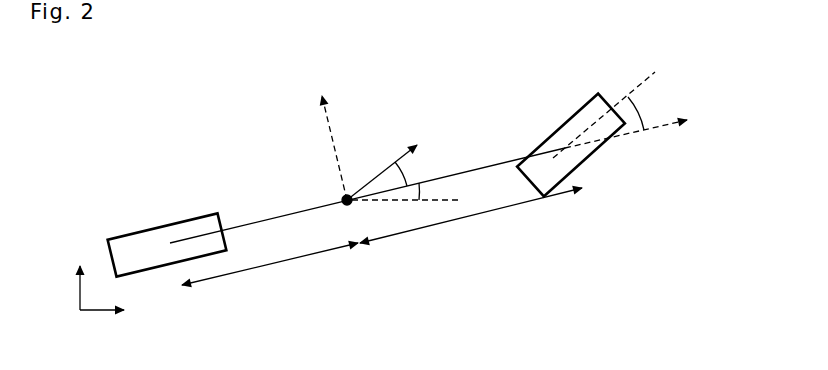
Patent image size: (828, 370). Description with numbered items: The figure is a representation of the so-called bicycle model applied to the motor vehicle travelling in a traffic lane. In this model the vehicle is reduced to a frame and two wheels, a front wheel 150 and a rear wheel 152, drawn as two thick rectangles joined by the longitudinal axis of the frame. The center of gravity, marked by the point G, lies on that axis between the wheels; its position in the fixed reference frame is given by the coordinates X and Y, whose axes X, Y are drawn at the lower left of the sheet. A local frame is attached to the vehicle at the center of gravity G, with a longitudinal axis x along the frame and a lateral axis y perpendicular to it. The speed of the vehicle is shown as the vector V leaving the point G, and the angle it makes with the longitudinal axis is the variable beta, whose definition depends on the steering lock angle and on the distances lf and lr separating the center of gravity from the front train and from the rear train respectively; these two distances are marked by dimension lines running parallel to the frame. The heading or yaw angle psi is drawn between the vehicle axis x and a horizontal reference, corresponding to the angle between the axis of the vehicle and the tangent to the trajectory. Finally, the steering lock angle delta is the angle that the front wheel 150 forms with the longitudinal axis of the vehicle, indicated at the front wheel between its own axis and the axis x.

The front wheel 150 is at (578, 108).
The rear wheel 152 is at (180, 218).
The center of gravity G is at (342, 211).
The speed V is at (382, 161).
The vehicle longitudinal axis x is at (710, 103).
The vehicle lateral axis y is at (317, 85).
The coordinate X is at (146, 298).
The coordinate Y is at (90, 240).
The variable β(δ) beta is at (408, 174).
The heading angle psi is at (407, 192).
The steering lock angle delta is at (642, 113).
The distance between center of gravity and rear train lr is at (270, 269).
The distance between center of gravity and front train lf is at (471, 216).